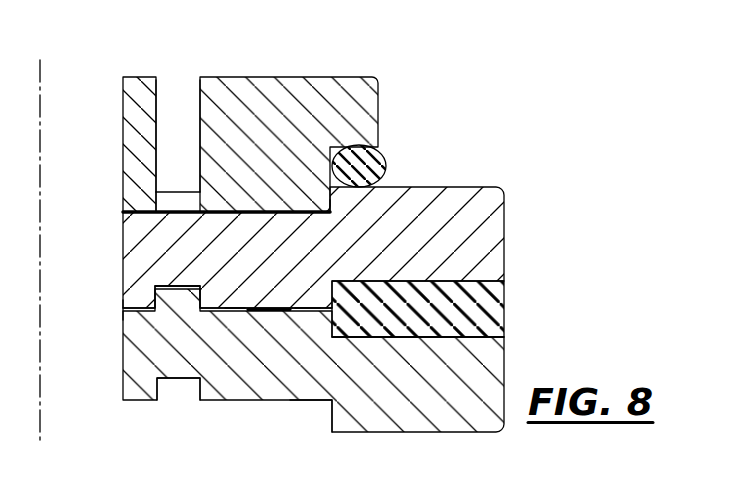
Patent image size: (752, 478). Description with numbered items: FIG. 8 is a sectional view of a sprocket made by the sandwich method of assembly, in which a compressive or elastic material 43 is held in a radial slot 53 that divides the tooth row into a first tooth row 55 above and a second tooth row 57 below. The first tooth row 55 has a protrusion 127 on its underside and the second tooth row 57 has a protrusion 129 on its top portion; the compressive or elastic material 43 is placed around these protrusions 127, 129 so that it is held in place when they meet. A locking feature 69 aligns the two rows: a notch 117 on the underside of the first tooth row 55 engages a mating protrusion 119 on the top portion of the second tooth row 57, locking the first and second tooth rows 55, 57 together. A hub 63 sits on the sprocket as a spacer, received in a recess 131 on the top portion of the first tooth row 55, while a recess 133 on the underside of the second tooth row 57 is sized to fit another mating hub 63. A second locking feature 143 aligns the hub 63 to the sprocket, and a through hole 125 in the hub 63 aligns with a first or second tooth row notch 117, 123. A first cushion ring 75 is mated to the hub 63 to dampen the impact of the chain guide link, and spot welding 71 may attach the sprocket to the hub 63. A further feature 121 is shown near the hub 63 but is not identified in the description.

The compressive or elastic material 43 is at (494, 290).
The radial slot 53 is at (452, 337).
The first tooth row 55 is at (446, 204).
The second tooth row 57 is at (432, 401).
The hub 63 is at (133, 92).
The locking feature 69 is at (123, 311).
The spot welding 71 is at (263, 312).
The first cushion ring 75 is at (371, 165).
The notch 117 is at (157, 286).
The mating protrusion 119 is at (148, 299).
The step top surface 121 is at (190, 190).
The second tooth row notch 123 is at (178, 380).
The through hole 125 is at (178, 106).
The protrusion 127 is at (303, 307).
The protrusion 129 is at (236, 312).
The recess 131 is at (254, 211).
The recess 133 is at (307, 401).
The locking feature 143 is at (167, 190).